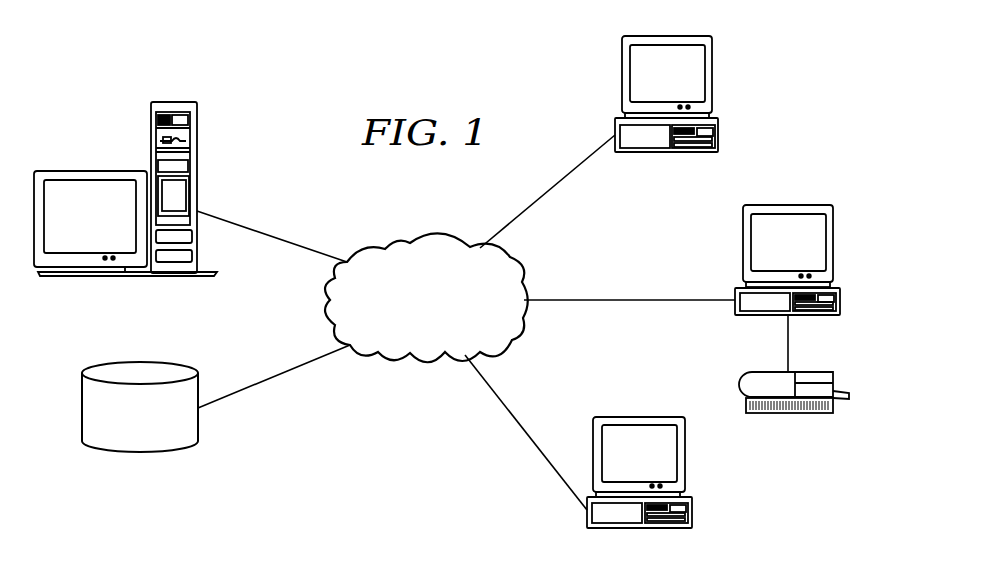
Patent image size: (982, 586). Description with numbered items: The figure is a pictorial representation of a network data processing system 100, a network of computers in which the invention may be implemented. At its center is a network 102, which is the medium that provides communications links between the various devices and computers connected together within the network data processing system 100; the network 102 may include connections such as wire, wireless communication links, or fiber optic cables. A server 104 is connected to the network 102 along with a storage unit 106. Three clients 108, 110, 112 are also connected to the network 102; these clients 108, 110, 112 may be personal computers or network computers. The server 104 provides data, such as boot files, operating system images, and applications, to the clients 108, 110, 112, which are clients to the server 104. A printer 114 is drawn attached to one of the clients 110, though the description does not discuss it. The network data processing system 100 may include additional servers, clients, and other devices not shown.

The network data processing system 100 is at (271, 97).
The network 102 is at (448, 312).
The server 104 is at (152, 125).
The storage unit 106 is at (162, 426).
The client 108 is at (712, 87).
The client 110 is at (833, 248).
The client 112 is at (638, 417).
The printer 114 is at (790, 413).